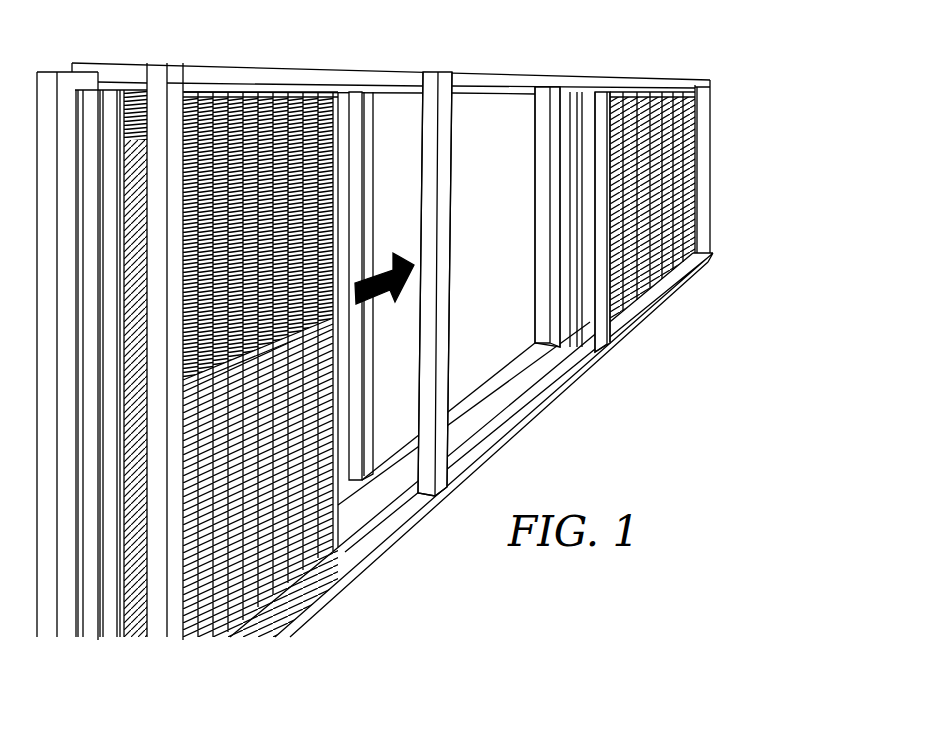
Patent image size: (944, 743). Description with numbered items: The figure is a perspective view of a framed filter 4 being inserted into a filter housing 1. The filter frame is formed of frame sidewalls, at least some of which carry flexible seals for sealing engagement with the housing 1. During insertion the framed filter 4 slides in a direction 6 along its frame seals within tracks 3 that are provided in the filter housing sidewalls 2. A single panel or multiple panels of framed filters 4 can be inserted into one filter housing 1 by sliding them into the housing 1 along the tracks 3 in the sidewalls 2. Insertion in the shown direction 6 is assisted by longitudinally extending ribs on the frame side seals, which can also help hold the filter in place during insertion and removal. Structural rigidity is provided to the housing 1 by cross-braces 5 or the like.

The filter housing 1 is at (398, 324).
The filter housing sidewalls 2 is at (491, 70).
The tracks 3 is at (547, 92).
The framed filter 4 is at (660, 165).
The cross-braces 5 is at (603, 298).
The direction 6 is at (405, 274).